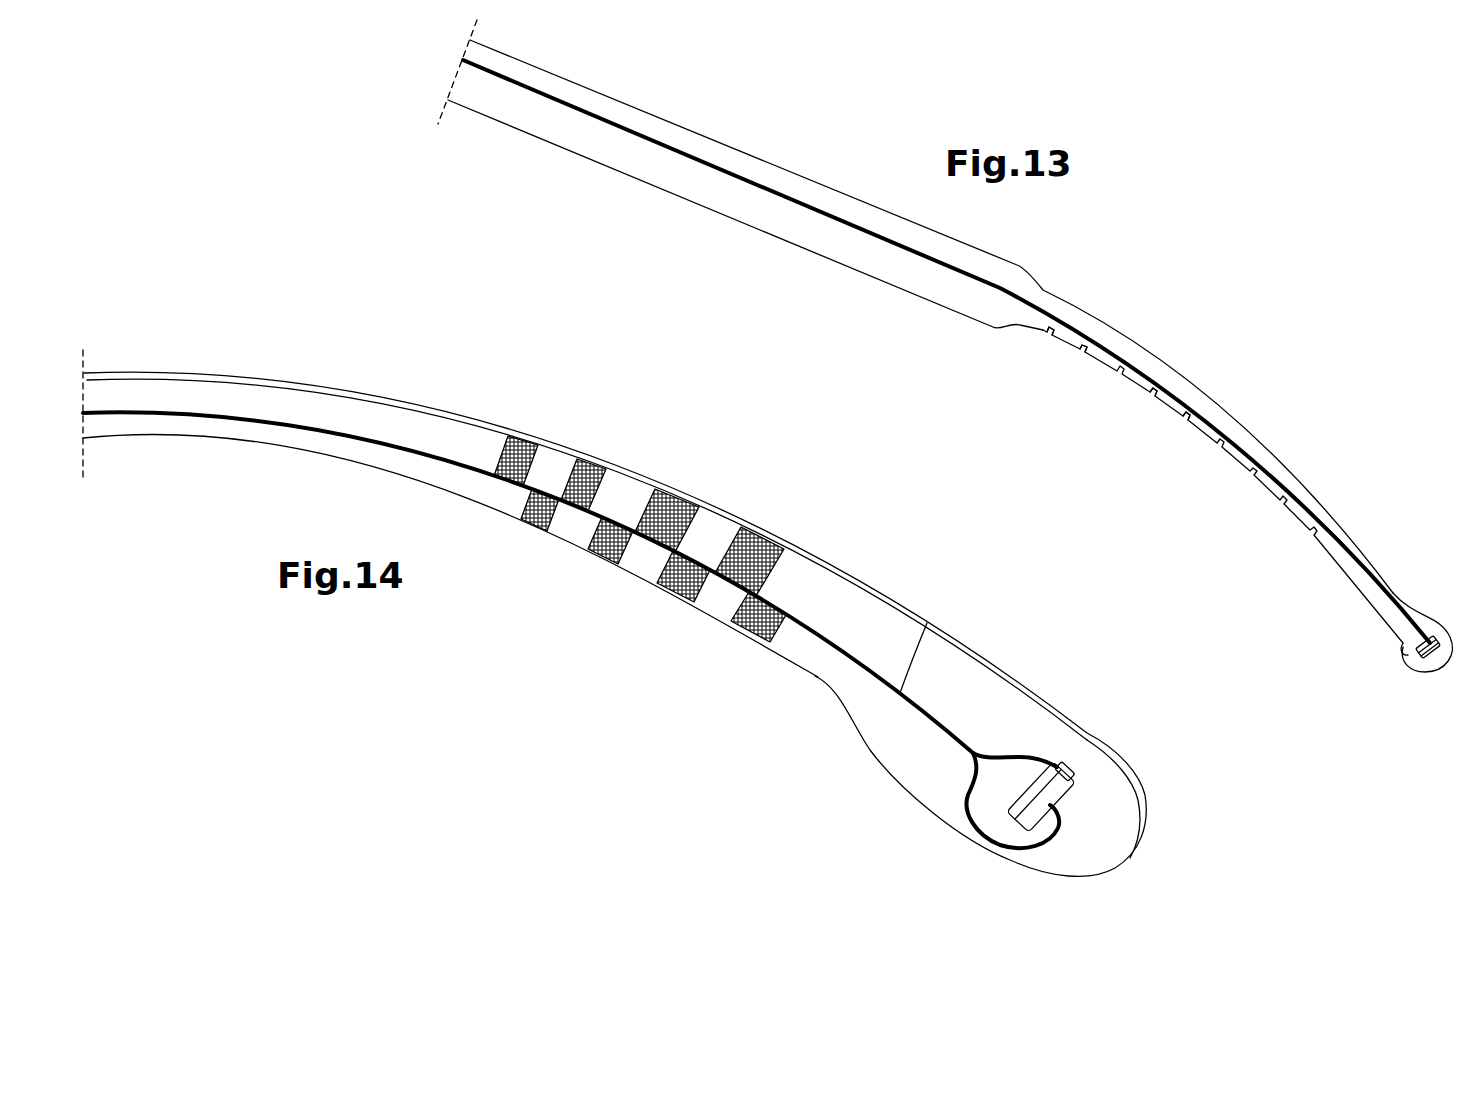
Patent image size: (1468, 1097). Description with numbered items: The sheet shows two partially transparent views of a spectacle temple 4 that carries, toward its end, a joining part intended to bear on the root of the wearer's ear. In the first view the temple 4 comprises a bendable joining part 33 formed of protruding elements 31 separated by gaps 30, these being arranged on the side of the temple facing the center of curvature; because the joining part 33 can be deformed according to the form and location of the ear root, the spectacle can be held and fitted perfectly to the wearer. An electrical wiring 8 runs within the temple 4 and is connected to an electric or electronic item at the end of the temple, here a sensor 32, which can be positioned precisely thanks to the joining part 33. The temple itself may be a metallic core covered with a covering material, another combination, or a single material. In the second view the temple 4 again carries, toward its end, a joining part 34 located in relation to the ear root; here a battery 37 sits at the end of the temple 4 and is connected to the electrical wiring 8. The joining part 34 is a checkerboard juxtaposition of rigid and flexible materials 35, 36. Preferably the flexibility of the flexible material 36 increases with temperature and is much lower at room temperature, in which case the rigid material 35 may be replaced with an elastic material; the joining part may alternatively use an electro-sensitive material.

In FIG. 13, the temple 4 is at (742, 167).
In FIG. 14, the temple 4 is at (400, 400).
In FIG. 13, the electrical wiring 8 is at (594, 112).
In FIG. 14, the electrical wiring 8 is at (275, 425).
In FIG. 13, the gaps 30 is at (1087, 357).
In FIG. 13, the protruding elements 31 is at (1163, 412).
In FIG. 13, the sensor 32 is at (1438, 680).
In FIG. 13, the joining part 33 is at (1228, 393).
In FIG. 14, the joining part 34 is at (753, 490).
In FIG. 14, the rigid material 35 is at (597, 455).
In FIG. 14, the flexible material 36 is at (623, 490).
In FIG. 14, the battery 37 is at (1058, 762).